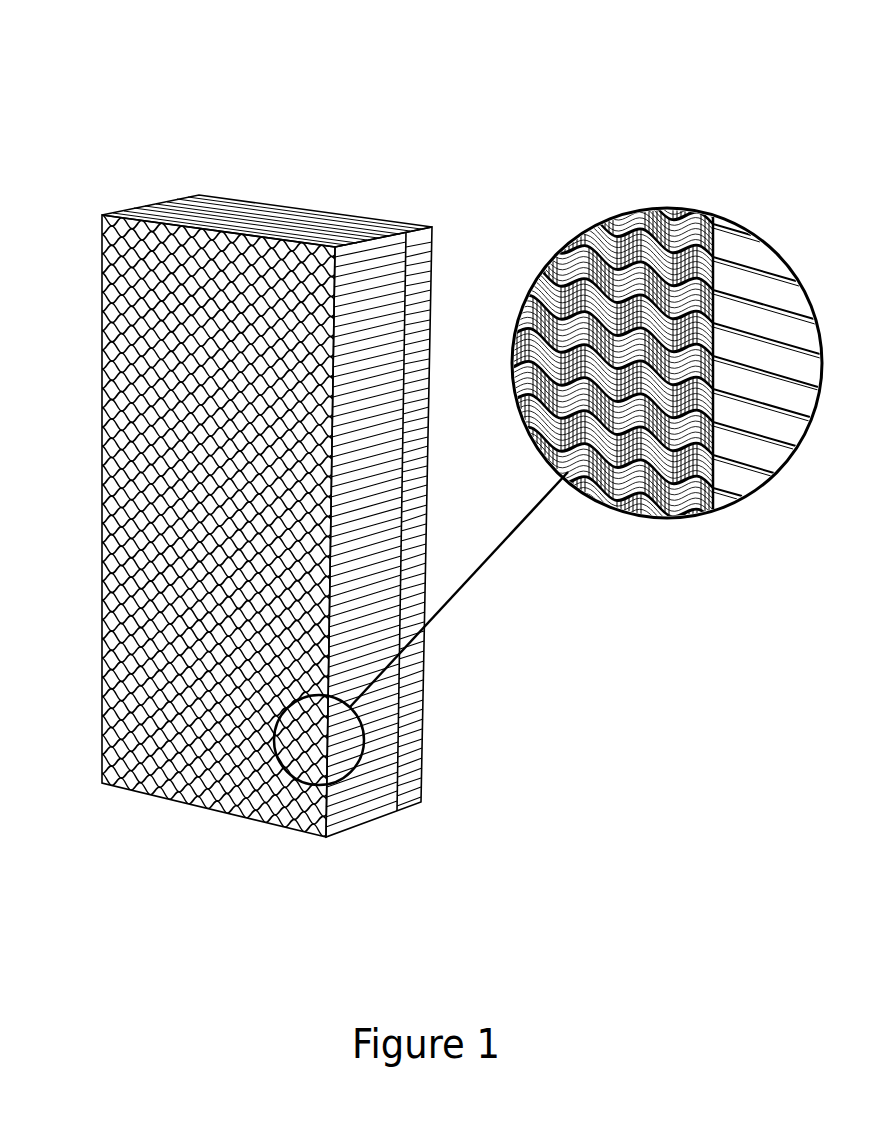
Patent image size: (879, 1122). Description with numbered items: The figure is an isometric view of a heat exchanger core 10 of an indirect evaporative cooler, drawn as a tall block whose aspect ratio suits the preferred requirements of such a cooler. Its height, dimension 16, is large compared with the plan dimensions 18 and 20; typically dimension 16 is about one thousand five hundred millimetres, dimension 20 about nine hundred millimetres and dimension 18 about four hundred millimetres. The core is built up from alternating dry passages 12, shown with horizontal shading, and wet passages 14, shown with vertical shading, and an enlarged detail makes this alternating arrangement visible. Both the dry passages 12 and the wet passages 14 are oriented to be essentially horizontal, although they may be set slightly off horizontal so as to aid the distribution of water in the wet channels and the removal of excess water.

The heat exchanger core 10 is at (403, 62).
The dry passages 12 is at (627, 233).
The wet passages 14 is at (588, 257).
The dimension 16 is at (62, 216).
The dimension 18 is at (92, 147).
The dimension 20 is at (432, 218).